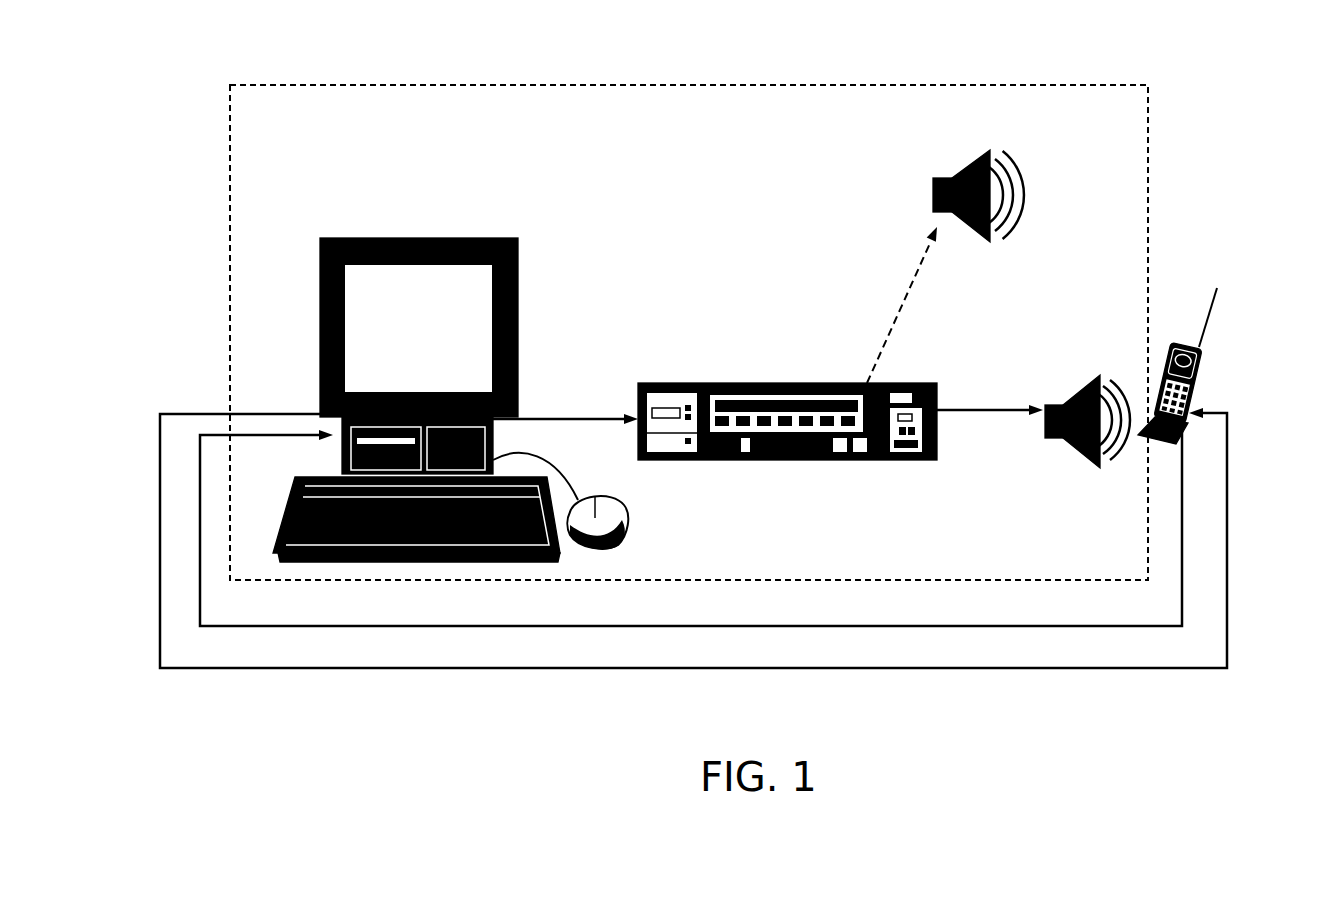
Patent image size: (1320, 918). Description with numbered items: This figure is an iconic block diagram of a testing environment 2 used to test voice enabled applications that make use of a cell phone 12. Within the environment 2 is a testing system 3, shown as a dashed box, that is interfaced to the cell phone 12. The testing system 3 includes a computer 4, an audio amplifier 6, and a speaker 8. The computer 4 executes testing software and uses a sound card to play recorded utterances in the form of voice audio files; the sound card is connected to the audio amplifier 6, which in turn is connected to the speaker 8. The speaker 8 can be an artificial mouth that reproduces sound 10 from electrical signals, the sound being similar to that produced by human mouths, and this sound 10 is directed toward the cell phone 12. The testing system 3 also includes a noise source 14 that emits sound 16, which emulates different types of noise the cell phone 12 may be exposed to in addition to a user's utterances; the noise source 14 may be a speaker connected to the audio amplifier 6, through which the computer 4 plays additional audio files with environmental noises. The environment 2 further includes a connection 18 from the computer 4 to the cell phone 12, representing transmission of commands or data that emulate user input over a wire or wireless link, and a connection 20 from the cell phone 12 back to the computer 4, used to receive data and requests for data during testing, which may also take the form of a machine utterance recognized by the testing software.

The testing environment 2 is at (184, 151).
The testing system 3 is at (628, 147).
The computer 4 is at (371, 223).
The audio amplifier 6 is at (759, 368).
The speaker 8 is at (1067, 387).
The sound 10 is at (1120, 370).
The cell phone 12 is at (1210, 375).
The noise source 14 is at (945, 162).
The sound 16 is at (1030, 190).
The connection 18 is at (1088, 678).
The connection 20 is at (963, 632).